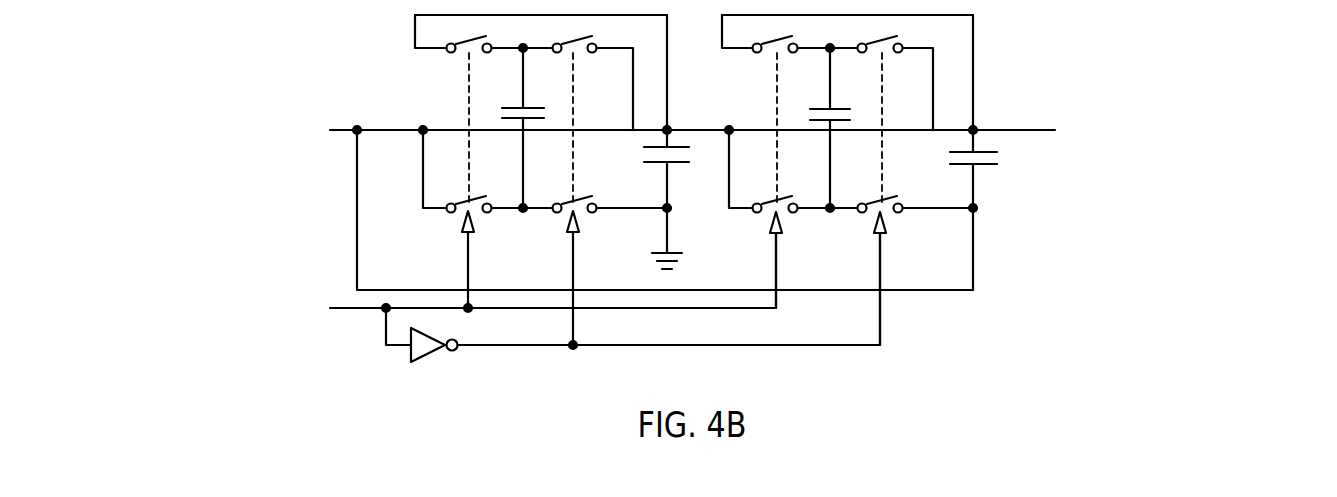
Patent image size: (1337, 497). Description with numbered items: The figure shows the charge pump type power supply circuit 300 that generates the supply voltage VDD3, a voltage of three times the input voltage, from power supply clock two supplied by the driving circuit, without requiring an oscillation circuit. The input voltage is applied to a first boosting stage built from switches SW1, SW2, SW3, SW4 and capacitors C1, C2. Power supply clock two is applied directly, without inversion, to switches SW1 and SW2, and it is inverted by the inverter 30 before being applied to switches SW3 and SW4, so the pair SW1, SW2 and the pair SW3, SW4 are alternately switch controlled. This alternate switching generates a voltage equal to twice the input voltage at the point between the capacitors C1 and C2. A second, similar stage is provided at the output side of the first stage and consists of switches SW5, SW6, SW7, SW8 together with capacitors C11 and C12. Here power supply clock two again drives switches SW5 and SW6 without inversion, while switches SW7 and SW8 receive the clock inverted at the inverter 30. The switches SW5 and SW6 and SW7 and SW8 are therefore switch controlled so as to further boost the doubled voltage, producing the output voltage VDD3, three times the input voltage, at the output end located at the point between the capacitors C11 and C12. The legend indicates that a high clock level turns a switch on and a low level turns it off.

The switch SW1 is at (460, 53).
The switch SW2 is at (455, 215).
The switch SW3 is at (583, 52).
The switch SW4 is at (565, 215).
The switch SW5 is at (768, 54).
The switch SW6 is at (762, 213).
The switch SW7 is at (887, 54).
The switch SW8 is at (877, 212).
The capacitor C1 is at (513, 107).
The capacitor C2 is at (678, 163).
The capacitor C11 is at (815, 108).
The capacitor C12 is at (985, 168).
The inverter 30 is at (447, 351).
The power supply circuit 300 is at (1057, 332).